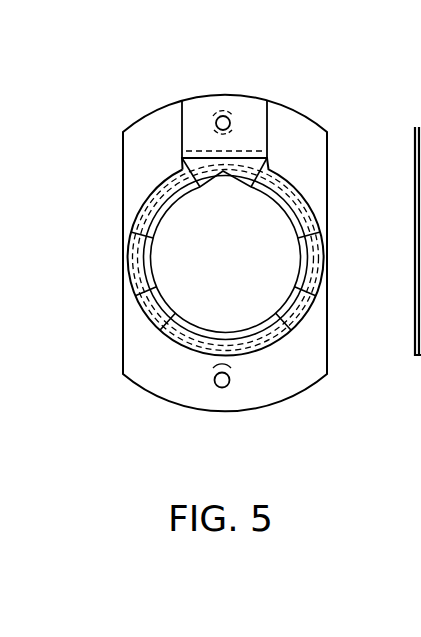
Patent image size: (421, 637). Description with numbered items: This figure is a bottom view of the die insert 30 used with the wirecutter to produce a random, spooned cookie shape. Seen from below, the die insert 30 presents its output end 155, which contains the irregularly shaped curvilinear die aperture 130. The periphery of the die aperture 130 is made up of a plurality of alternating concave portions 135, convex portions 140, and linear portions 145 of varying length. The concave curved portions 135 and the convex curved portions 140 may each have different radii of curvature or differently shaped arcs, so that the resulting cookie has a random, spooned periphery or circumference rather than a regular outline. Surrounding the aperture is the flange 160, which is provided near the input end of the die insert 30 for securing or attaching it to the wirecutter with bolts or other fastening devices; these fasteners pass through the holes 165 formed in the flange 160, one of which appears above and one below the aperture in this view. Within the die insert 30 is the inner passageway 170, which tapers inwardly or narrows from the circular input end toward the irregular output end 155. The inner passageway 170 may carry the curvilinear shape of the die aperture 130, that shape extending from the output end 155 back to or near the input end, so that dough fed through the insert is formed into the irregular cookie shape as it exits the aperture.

The die insert 30 is at (140, 118).
The curvilinear die aperture 130 is at (130, 233).
The concave portions 135 is at (282, 176).
The convex portions 140 is at (266, 160).
The linear portions 145 is at (145, 253).
The output end 155 is at (417, 197).
The flange 160 is at (157, 122).
The holes 165 is at (229, 107).
The inner passageway 170 is at (300, 283).